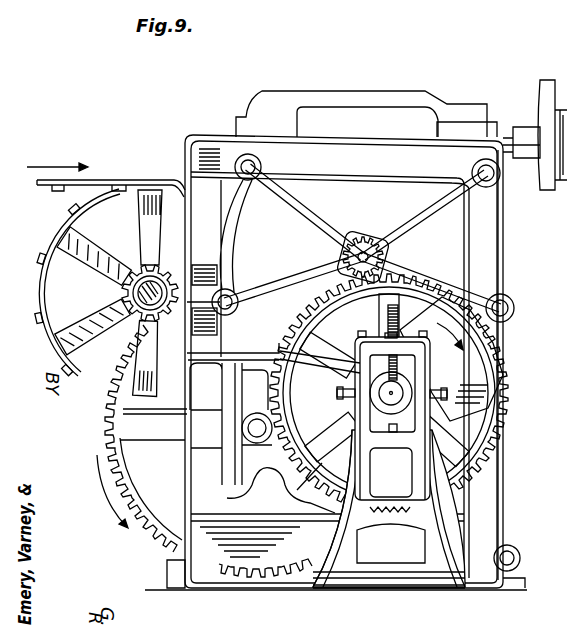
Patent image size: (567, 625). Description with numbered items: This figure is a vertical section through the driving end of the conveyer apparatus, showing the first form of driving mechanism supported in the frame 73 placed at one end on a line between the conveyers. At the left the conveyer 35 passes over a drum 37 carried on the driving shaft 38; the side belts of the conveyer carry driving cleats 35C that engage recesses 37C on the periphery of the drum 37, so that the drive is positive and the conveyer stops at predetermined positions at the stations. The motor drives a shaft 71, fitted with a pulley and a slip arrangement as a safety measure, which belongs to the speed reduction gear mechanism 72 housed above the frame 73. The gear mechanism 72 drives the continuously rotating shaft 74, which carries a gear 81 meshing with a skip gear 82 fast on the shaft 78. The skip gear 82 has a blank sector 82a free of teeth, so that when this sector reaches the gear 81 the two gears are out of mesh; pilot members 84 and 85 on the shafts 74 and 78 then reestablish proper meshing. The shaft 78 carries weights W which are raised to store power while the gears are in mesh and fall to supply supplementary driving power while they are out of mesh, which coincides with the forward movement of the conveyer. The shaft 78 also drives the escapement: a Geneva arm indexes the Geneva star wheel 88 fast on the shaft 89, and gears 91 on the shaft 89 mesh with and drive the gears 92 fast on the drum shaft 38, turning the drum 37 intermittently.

The conveyer 35 is at (125, 160).
The driving cleats 35C is at (55, 189).
The drums 37 is at (38, 292).
The recesses 37C is at (36, 237).
The driving shaft 38 is at (115, 292).
The shaft 71 is at (507, 127).
The speed reduction gear mechanism 72 is at (382, 120).
The frame 73 is at (518, 481).
The shaft 74 is at (382, 252).
The shaft 78 is at (408, 378).
The gear 81 is at (392, 229).
The skip gear 82 is at (500, 427).
The blank sector 82a is at (326, 245).
The pilot member 84 is at (328, 241).
The pilot member 85 is at (279, 343).
The Geneva star wheel 88 is at (328, 515).
The shaft 89 is at (248, 428).
The gears 91 is at (165, 472).
The gears 92 is at (134, 321).
The weights W is at (505, 346).